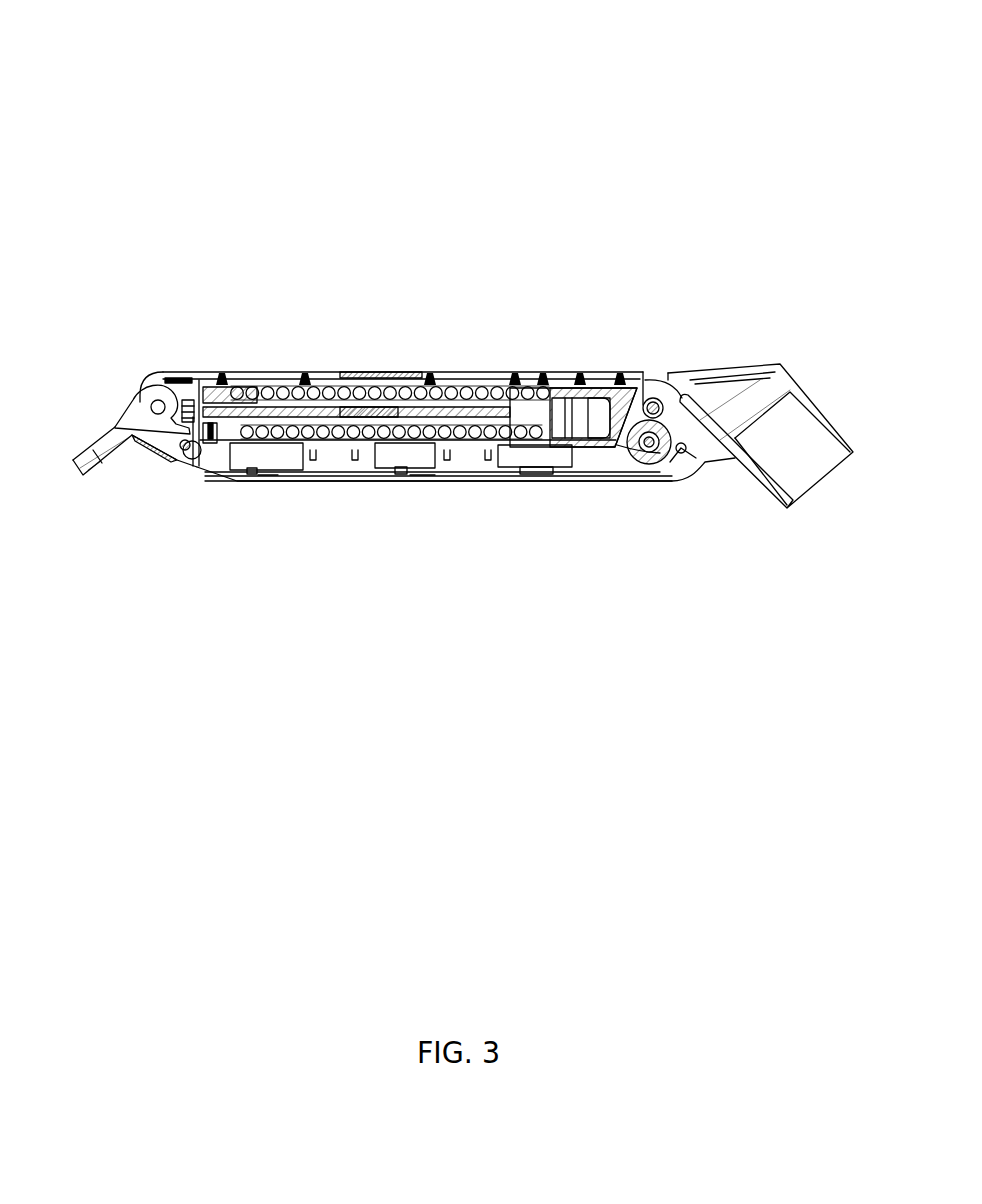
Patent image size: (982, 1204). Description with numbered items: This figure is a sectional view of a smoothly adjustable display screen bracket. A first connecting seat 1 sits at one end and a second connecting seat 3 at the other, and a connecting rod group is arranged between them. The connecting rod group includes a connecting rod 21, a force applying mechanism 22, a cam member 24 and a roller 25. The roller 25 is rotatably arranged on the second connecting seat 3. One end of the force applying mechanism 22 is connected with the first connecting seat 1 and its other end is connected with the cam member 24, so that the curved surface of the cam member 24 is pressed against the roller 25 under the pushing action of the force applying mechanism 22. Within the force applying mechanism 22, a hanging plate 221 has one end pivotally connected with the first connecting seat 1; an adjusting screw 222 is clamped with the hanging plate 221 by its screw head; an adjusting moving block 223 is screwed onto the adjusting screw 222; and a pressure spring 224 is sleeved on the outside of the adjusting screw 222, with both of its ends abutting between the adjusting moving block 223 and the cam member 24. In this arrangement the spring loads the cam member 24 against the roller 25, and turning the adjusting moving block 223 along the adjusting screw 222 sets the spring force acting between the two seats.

The first connecting seat 1 is at (112, 428).
The second connecting seat 3 is at (733, 413).
The connecting rod 21 is at (433, 478).
The force applying mechanism 22 is at (337, 222).
The hanging plate 221 is at (188, 380).
The adjusting screw 222 is at (317, 413).
The adjusting moving block 223 is at (215, 400).
The pressure spring 224 is at (453, 388).
The cam member 24 is at (578, 417).
The roller 25 is at (651, 430).